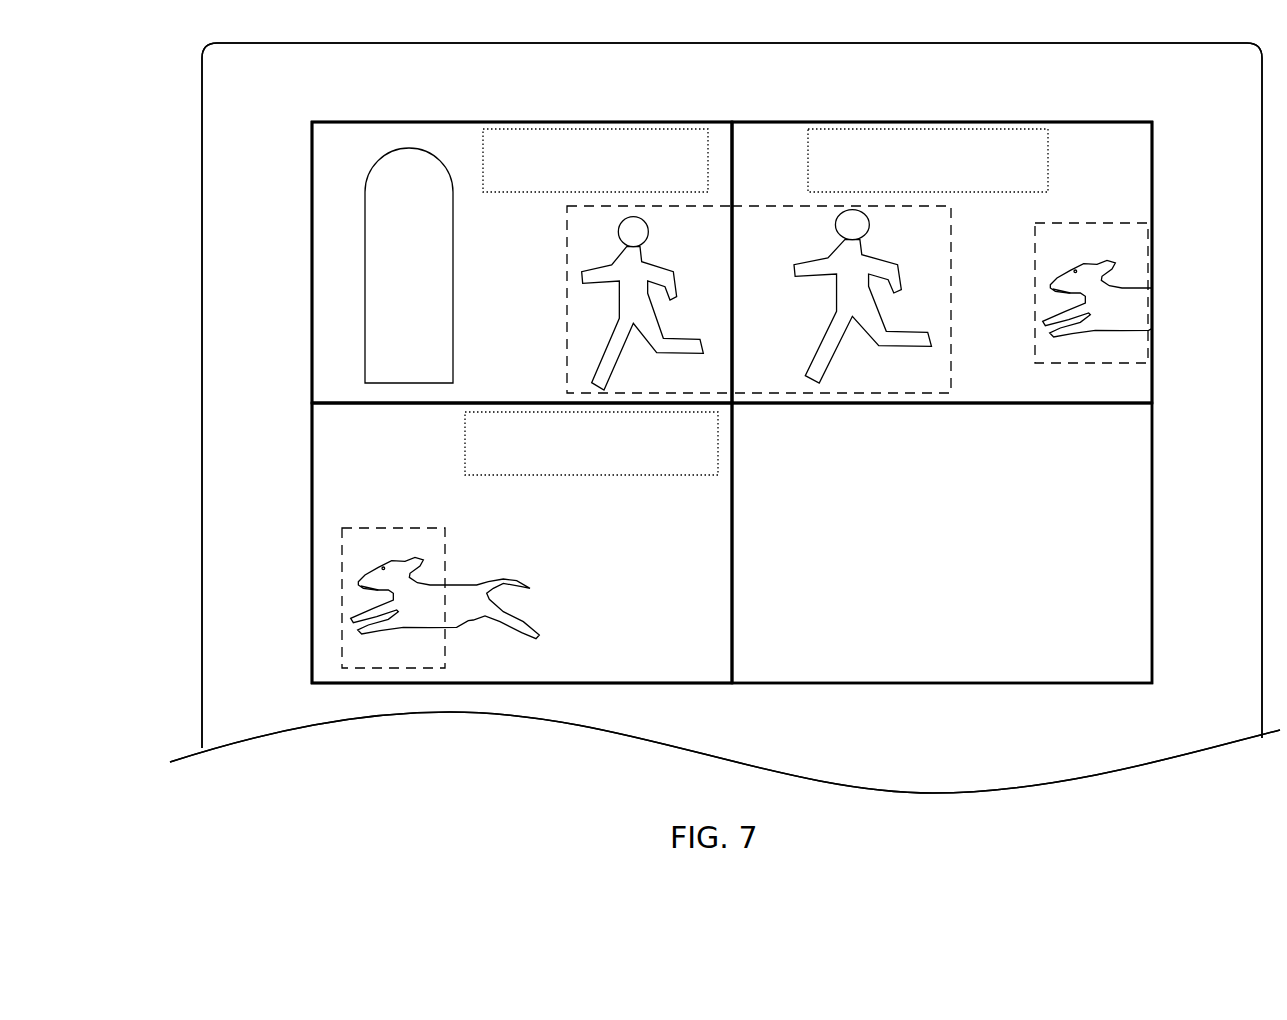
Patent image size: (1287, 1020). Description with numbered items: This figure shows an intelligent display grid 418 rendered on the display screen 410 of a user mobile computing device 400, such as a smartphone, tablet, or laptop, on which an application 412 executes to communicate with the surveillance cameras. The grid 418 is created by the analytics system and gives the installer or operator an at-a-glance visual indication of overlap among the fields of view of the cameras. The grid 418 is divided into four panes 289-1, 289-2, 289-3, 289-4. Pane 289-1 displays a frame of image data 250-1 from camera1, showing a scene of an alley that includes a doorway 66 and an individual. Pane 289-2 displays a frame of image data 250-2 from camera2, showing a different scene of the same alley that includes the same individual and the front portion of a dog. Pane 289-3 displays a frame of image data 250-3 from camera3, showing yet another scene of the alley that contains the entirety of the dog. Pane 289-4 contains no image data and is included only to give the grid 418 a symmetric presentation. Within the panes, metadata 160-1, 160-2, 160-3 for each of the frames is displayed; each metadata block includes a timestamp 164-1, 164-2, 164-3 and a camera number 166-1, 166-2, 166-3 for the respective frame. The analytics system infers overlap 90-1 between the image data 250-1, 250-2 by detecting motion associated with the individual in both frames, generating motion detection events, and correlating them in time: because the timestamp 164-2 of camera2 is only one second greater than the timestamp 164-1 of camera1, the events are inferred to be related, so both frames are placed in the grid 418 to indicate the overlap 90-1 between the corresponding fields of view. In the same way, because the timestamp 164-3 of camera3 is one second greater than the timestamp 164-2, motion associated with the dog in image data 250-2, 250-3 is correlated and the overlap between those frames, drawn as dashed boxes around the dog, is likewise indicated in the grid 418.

The user mobile computing device 400 is at (201, 512).
The display screen 410 is at (263, 637).
The application 412 is at (270, 112).
The intelligent display grid 418 is at (489, 99).
The frame of image data 250-1 is at (333, 250).
The frame of image data 250-2 is at (1135, 202).
The frame of image data 250-3 is at (328, 485).
The pane 289-1 is at (537, 383).
The pane 289-2 is at (1027, 388).
The pane 289-3 is at (677, 661).
The pane 289-4 is at (1087, 668).
The doorway 66 is at (453, 300).
The overlap 90-1 is at (800, 395).
The metadata 160-1 is at (663, 146).
The metadata 160-2 is at (993, 146).
The metadata 160-3 is at (656, 430).
The timestamp 164-1 is at (672, 163).
The timestamp 164-2 is at (990, 153).
The timestamp 164-3 is at (613, 447).
The camera number 166-1 is at (538, 193).
The camera number 166-2 is at (810, 178).
The camera number 166-3 is at (530, 470).